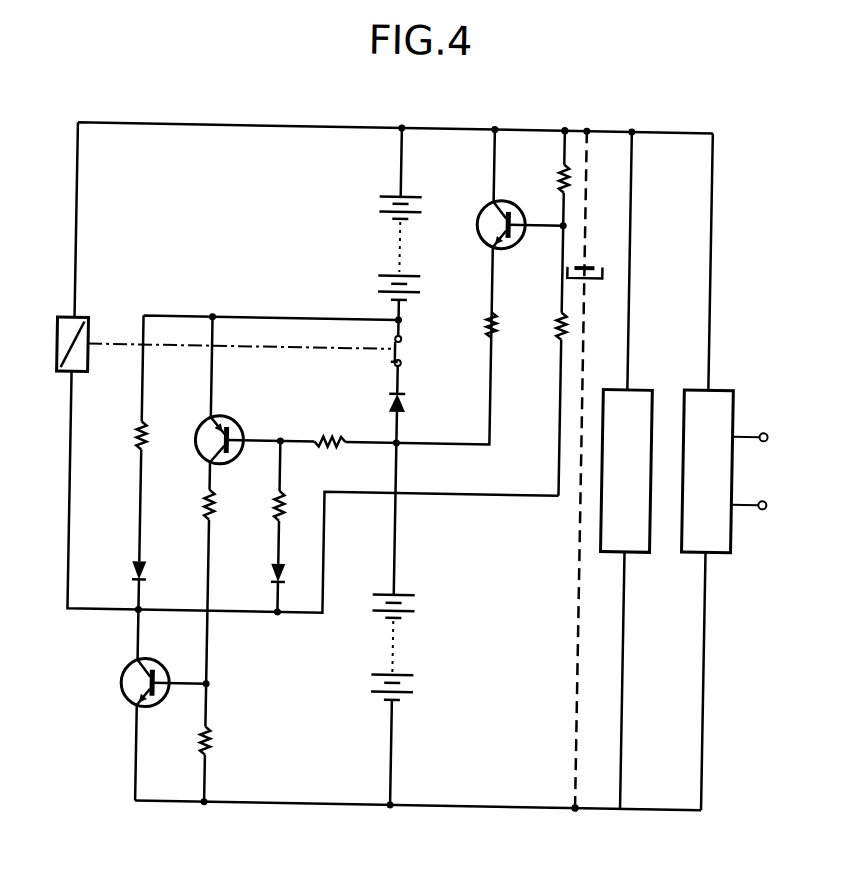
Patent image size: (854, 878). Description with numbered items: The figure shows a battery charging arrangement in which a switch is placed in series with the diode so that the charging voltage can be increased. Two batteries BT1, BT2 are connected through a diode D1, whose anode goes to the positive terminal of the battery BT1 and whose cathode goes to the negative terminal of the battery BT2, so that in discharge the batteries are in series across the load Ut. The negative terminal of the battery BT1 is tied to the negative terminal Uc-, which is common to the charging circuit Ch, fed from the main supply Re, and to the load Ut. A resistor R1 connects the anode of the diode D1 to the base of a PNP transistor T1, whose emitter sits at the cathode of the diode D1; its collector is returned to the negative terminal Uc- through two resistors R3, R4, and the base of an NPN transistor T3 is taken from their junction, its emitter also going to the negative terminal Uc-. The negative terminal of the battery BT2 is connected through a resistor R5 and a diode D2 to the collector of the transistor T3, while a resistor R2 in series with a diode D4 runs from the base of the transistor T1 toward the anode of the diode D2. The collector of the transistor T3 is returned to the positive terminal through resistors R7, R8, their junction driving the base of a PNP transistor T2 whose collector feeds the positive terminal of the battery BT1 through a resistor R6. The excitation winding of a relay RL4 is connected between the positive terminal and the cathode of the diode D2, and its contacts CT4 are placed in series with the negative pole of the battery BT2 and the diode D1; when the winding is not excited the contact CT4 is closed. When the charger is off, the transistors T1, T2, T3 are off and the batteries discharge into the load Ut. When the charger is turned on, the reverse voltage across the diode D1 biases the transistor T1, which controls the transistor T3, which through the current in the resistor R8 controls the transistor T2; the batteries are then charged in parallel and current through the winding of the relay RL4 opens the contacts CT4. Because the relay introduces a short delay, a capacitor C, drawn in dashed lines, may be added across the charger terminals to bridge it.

The relay RL4 is at (87, 335).
The battery BT2 is at (380, 227).
The battery BT1 is at (410, 623).
The PNP transistor T1 is at (227, 419).
The PNP transistor T2 is at (486, 207).
The NPN transistor T3 is at (134, 677).
The resistor R1 is at (324, 439).
The resistor R2 is at (276, 521).
The resistor R3 is at (206, 519).
The resistor R4 is at (215, 755).
The resistor R5 is at (137, 445).
The resistor R6 is at (486, 323).
The resistor R7 is at (558, 177).
The resistor R8 is at (557, 333).
The diode D1 is at (404, 400).
The diode D2 is at (135, 582).
The diode D4 is at (274, 573).
The capacitor C is at (596, 261).
The relay contacts CT4 is at (400, 350).
The load Ut is at (623, 527).
The charging circuit Ch is at (708, 515).
The main supply Re is at (752, 471).
The negative terminal Uc- is at (595, 824).